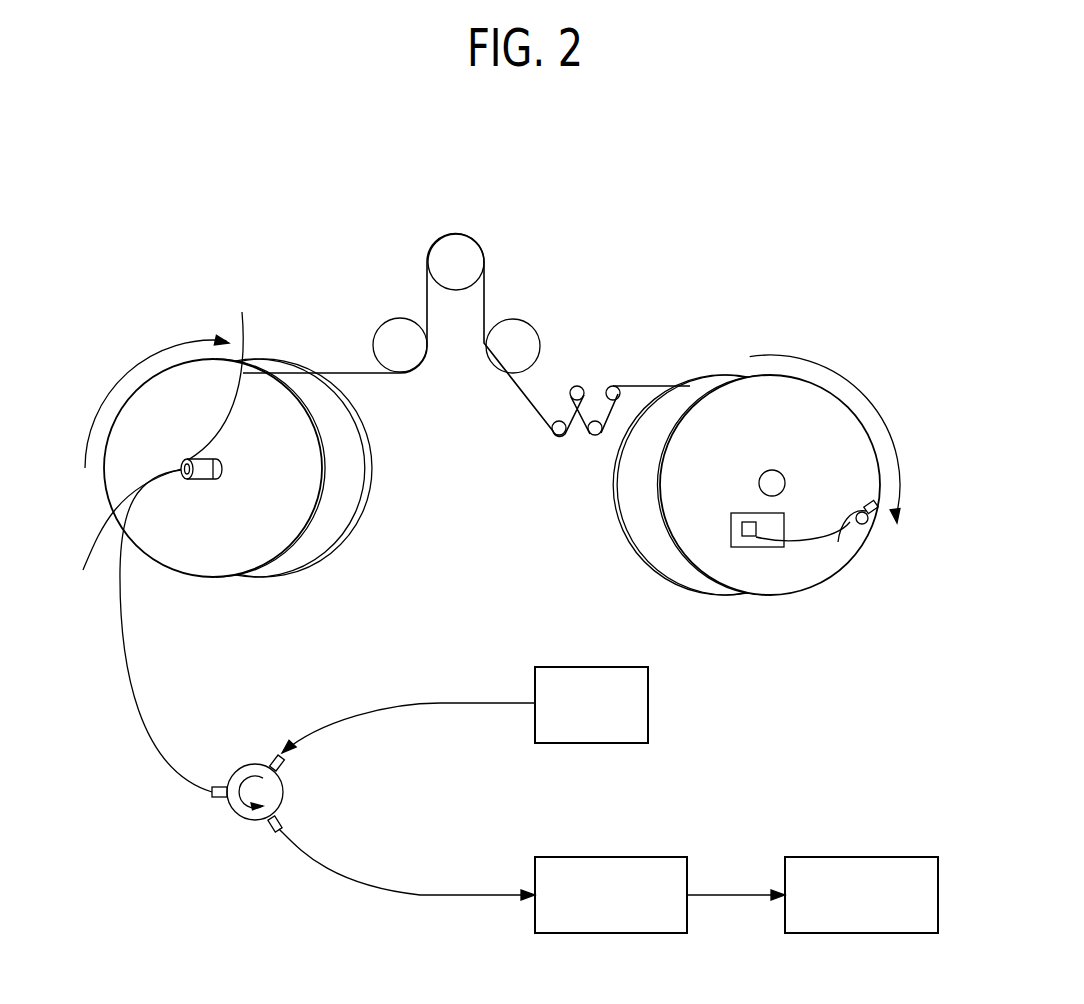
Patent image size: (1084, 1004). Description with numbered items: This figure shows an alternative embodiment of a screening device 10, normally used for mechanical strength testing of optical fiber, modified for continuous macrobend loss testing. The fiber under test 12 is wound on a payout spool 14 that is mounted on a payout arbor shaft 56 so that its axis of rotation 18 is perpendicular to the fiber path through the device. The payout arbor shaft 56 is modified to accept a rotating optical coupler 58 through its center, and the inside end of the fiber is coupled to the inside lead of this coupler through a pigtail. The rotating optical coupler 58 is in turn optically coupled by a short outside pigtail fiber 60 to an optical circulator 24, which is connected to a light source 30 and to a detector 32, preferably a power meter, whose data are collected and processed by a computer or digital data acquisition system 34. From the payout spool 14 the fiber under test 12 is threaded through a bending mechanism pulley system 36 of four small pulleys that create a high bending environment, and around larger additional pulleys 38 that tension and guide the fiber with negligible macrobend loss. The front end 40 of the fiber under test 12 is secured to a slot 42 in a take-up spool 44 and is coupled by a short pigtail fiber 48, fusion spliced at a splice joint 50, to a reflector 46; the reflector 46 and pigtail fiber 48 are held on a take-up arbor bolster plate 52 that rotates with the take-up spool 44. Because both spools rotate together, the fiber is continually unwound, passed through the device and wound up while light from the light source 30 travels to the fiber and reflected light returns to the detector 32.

The screening device 10 is at (505, 176).
The fiber under test 12 is at (335, 372).
The payout spool 14 is at (262, 591).
The axis of rotation 18 is at (224, 472).
The optical circulator 24 is at (251, 820).
The light source 30 is at (650, 700).
The detector 32 is at (610, 933).
The computer or digital data acquisition system 34 is at (865, 933).
The bending mechanism pulley system 36 is at (597, 390).
The additional pulleys 38 is at (492, 261).
The front end of the fiber under test 40 is at (873, 520).
The slot 42 is at (880, 503).
The take-up spool 44 is at (697, 362).
The reflector 46 is at (748, 537).
The pigtail fiber 48 is at (827, 543).
The splice joint 50 is at (843, 528).
The take-up arbor bolster plate 52 is at (765, 522).
The payout arbor shaft 56 is at (83, 570).
The rotating optical coupler 58 is at (225, 371).
The outside pigtail fiber 60 is at (120, 623).